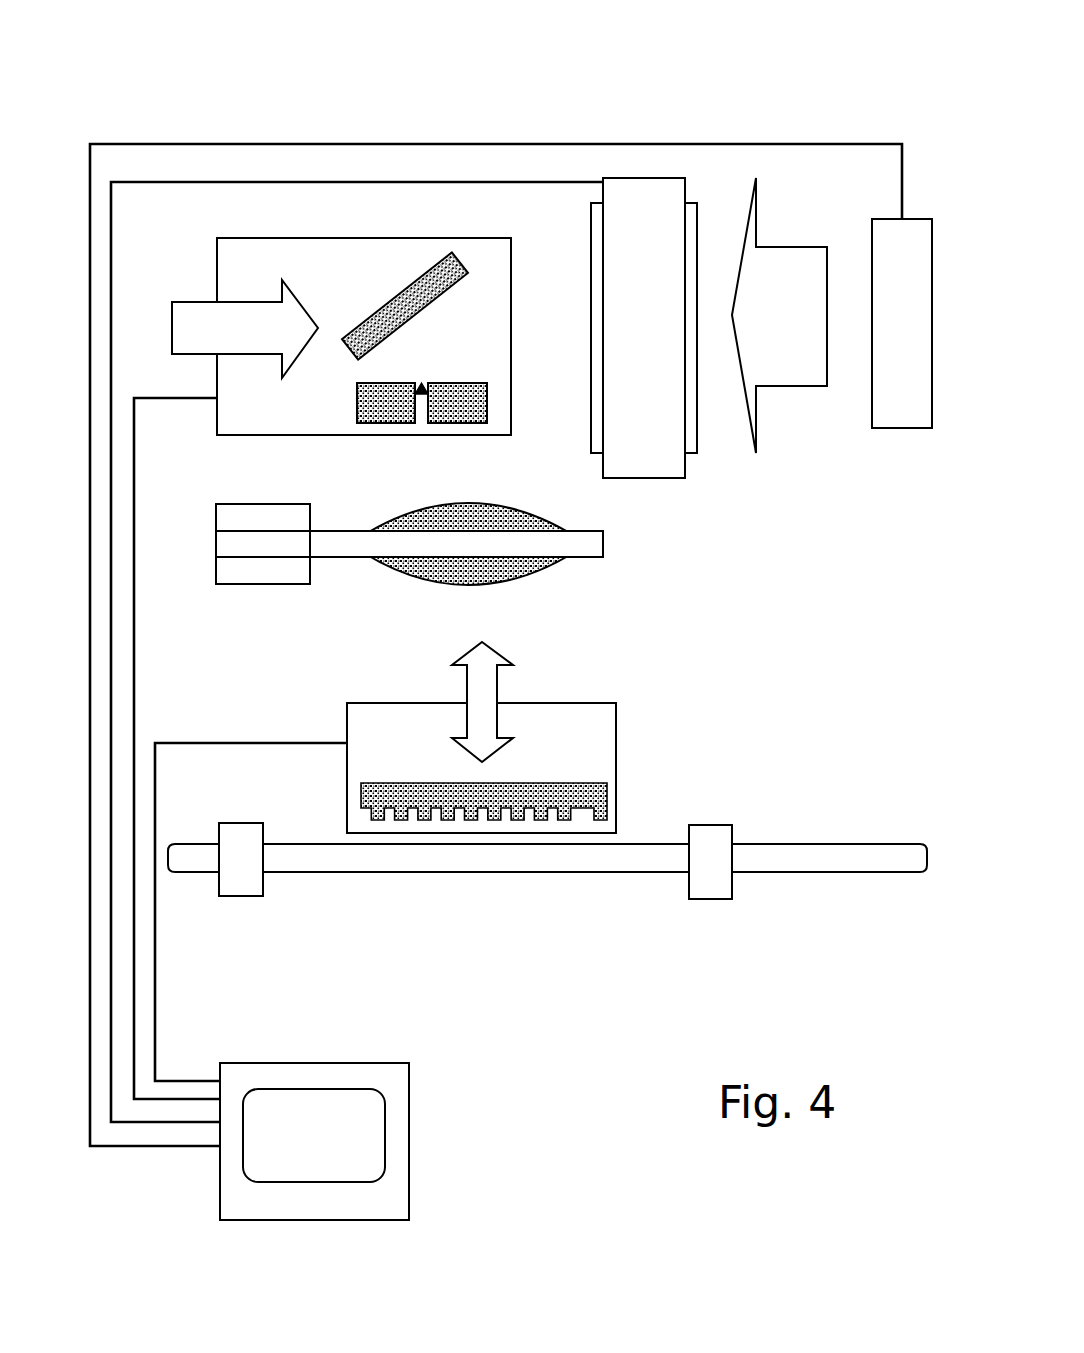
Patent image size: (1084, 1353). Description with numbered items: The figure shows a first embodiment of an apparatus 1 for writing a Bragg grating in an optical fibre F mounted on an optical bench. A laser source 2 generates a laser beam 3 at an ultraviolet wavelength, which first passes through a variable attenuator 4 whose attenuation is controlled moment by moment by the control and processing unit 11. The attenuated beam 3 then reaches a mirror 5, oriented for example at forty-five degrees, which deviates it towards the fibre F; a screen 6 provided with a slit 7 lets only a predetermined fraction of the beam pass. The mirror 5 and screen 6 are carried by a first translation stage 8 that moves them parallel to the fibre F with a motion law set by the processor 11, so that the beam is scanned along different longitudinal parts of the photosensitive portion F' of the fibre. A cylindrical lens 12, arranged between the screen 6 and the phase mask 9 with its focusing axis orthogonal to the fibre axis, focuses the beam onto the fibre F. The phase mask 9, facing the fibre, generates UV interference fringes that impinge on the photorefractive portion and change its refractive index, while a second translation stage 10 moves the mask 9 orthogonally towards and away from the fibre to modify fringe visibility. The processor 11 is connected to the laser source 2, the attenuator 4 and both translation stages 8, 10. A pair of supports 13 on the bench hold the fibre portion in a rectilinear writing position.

The apparatus 1 is at (360, 76).
The laser source 2 is at (892, 405).
The laser beam 3 is at (783, 368).
The variable attenuator 4 is at (667, 453).
The mirror 5 is at (427, 272).
The screen 6 is at (487, 387).
The slit 7 is at (405, 382).
The first translation stage 8 is at (238, 265).
The phase mask 9 is at (573, 783).
The second translation stage 10 is at (436, 722).
The control and processing unit 11 is at (363, 1138).
The cylindrical lens 12 is at (547, 573).
The supports 13 is at (247, 886).
The optical fibre F is at (808, 900).
The photosensitive portion of the fibre F' is at (428, 901).